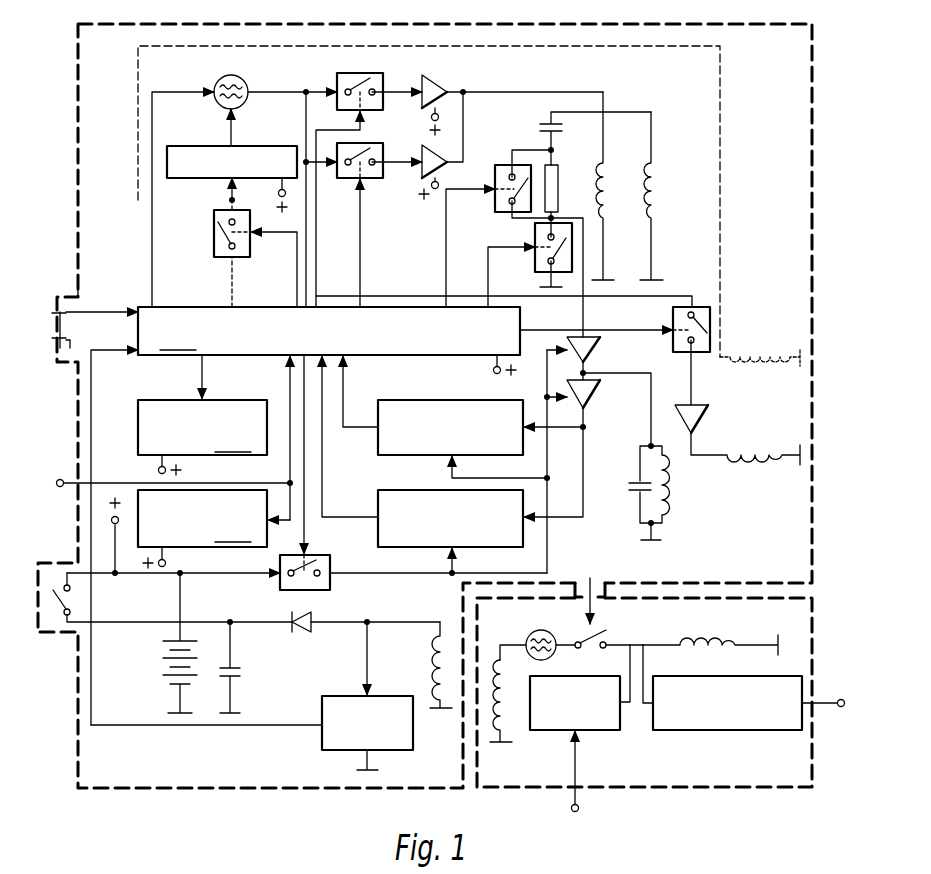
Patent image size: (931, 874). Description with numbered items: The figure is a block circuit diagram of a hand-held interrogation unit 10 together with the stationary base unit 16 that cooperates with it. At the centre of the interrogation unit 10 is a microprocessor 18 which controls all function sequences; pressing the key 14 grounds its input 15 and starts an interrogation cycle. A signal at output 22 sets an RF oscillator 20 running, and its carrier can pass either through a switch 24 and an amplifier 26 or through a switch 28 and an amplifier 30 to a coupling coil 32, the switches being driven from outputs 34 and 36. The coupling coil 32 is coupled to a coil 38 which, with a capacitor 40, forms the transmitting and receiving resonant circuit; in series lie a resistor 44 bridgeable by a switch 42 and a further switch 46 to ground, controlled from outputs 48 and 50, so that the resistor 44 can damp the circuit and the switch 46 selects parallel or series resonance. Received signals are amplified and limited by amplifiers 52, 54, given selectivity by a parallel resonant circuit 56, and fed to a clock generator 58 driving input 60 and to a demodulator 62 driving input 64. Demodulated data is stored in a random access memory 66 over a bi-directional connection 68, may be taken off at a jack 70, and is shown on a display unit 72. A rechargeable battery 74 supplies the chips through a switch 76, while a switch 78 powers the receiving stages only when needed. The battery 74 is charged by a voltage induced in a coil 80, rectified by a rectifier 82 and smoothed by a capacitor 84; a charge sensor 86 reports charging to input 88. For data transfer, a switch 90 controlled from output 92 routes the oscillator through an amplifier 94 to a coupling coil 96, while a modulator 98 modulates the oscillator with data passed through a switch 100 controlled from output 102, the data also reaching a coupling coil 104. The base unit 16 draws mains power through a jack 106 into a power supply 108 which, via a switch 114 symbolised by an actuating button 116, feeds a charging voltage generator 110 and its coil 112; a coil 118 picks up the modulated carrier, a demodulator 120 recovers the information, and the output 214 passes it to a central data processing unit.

The interrogation unit 10 is at (828, 104).
The key 14 is at (46, 330).
The input 15 is at (132, 308).
The base unit 16 is at (828, 612).
The microprocessor 18 is at (329, 341).
The RF oscillator 20 is at (243, 105).
The output 22 is at (158, 307).
The switch 24 is at (372, 112).
The amplifier 26 is at (441, 82).
The switch 28 is at (352, 180).
The amplifier 30 is at (424, 172).
The coupling coil 32 is at (606, 182).
The output 34 is at (340, 286).
The output 36 is at (370, 302).
The coil 38 is at (653, 180).
The capacitor 40 is at (540, 128).
The switch 42 is at (495, 200).
The resistor 44 is at (556, 180).
The switch 46 is at (538, 262).
The output 48 is at (432, 300).
The output 50 is at (476, 300).
The amplifier 52 is at (598, 352).
The amplifier 54 is at (598, 396).
The parallel resonant circuit 56 is at (640, 518).
The clock generator 58 is at (476, 400).
The input 60 is at (346, 358).
The demodulator 62 is at (382, 503).
The input 64 is at (327, 424).
The random access memory 66 is at (202, 529).
The bi-directional connection 68 is at (288, 403).
The jack 70 is at (57, 480).
The display unit 72 is at (202, 415).
The rechargeable battery 74 is at (172, 688).
The switch 76 is at (50, 578).
The switch 78 is at (320, 591).
The coil 80 is at (430, 659).
The rectifier 82 is at (298, 626).
The capacitor 84 is at (242, 673).
The charge sensor 86 is at (337, 748).
The input 88 is at (134, 348).
The switch 90 is at (673, 315).
The output 92 is at (524, 331).
The amplifier 94 is at (700, 413).
The coupling coil 96 is at (750, 430).
The modulator 98 is at (201, 146).
The switch 100 is at (214, 248).
The output 102 is at (292, 306).
The coupling coil 104 is at (768, 357).
The jack 106 is at (580, 809).
The power supply 108 is at (618, 720).
The charging voltage generator 110 is at (541, 630).
The coil 112 is at (502, 692).
The switch 114 is at (605, 638).
The actuating button 116 is at (603, 578).
The coil 118 is at (706, 645).
The demodulator 120 is at (722, 725).
The output 214 is at (845, 710).